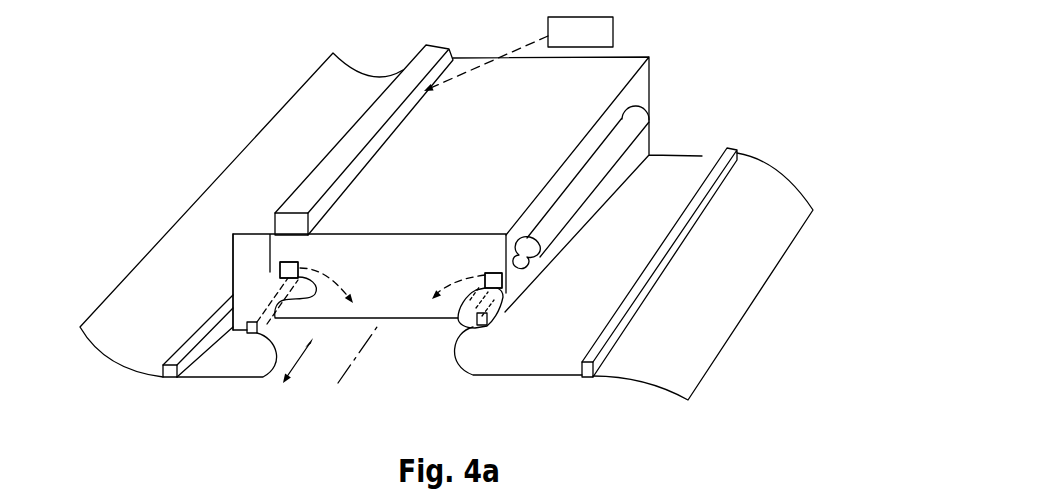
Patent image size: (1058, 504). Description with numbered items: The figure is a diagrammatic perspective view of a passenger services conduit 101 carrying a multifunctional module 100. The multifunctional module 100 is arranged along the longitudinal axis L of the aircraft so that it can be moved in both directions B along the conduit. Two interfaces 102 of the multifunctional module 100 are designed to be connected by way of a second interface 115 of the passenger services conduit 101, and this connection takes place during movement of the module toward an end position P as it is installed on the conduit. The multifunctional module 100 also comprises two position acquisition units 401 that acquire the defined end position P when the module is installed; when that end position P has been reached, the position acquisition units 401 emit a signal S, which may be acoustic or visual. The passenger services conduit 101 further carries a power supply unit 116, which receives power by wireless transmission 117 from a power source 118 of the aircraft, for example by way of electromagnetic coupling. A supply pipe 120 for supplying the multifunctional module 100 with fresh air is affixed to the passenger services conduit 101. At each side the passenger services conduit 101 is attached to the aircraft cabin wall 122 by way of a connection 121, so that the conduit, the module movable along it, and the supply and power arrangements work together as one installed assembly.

The multifunctional module 100 is at (407, 325).
The passenger services conduit 101 is at (229, 227).
The interfaces 102 is at (280, 272).
The second interface 115 is at (250, 334).
The power supply unit 116 is at (288, 223).
The wireless transmission 117 is at (530, 43).
The power source 118 is at (613, 30).
The supply pipe 120 is at (633, 122).
The connection 121 is at (168, 378).
The aircraft cabin wall 122 is at (113, 364).
The position acquisition units 401 is at (292, 262).
The signal S is at (436, 292).
The end position P is at (262, 282).
The directions B is at (298, 360).
The longitudinal axis L is at (352, 373).